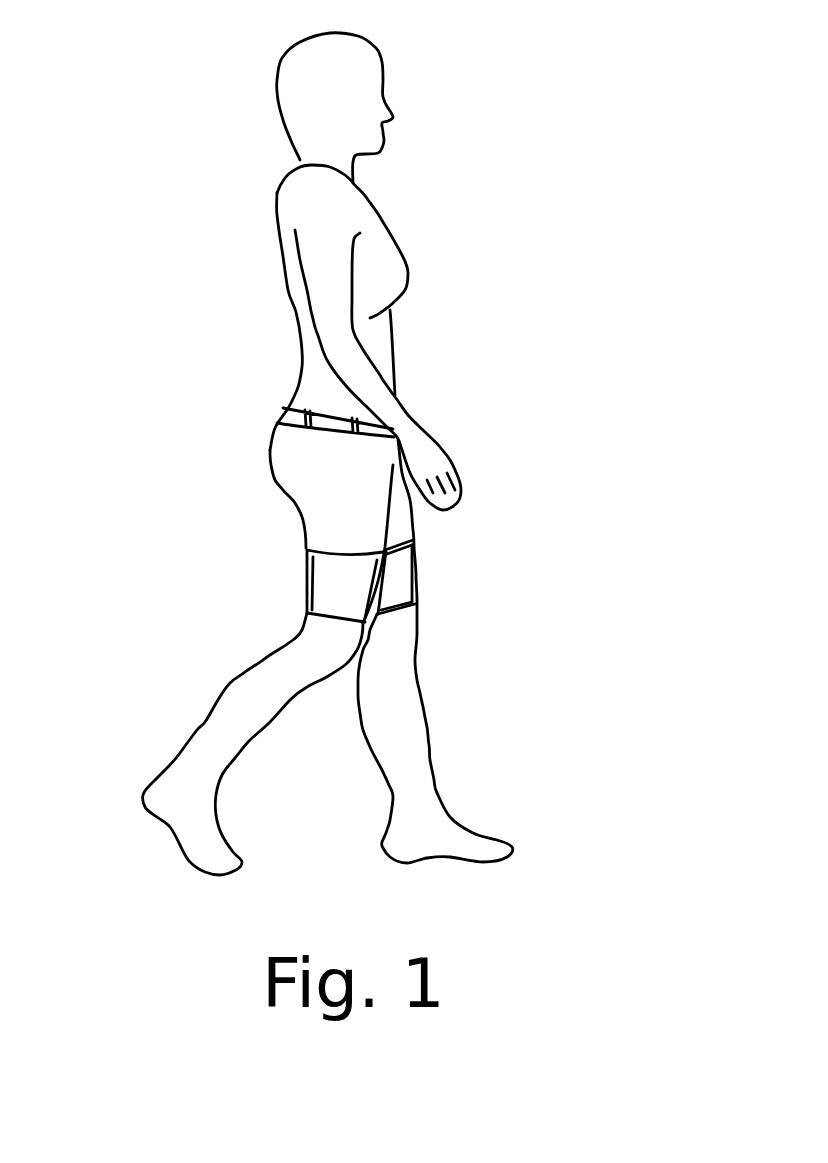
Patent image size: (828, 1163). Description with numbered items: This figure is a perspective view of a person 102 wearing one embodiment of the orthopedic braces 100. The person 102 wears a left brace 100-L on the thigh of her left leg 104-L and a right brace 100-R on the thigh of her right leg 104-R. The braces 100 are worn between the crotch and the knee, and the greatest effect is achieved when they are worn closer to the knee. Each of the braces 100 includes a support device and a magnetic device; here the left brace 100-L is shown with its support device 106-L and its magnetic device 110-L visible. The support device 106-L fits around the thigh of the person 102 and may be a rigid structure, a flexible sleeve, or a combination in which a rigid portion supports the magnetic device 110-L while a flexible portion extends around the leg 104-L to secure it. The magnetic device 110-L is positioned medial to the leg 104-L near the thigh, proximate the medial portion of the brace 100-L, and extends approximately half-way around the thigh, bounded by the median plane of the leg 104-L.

The braces 100 is at (427, 573).
The person 102 is at (275, 200).
The right brace 100-R is at (305, 592).
The left brace 100-L is at (422, 547).
The right leg 104-R is at (200, 730).
The left leg 104-L is at (427, 725).
The magnetic device 110-L is at (422, 587).
The support device 106-L is at (422, 600).